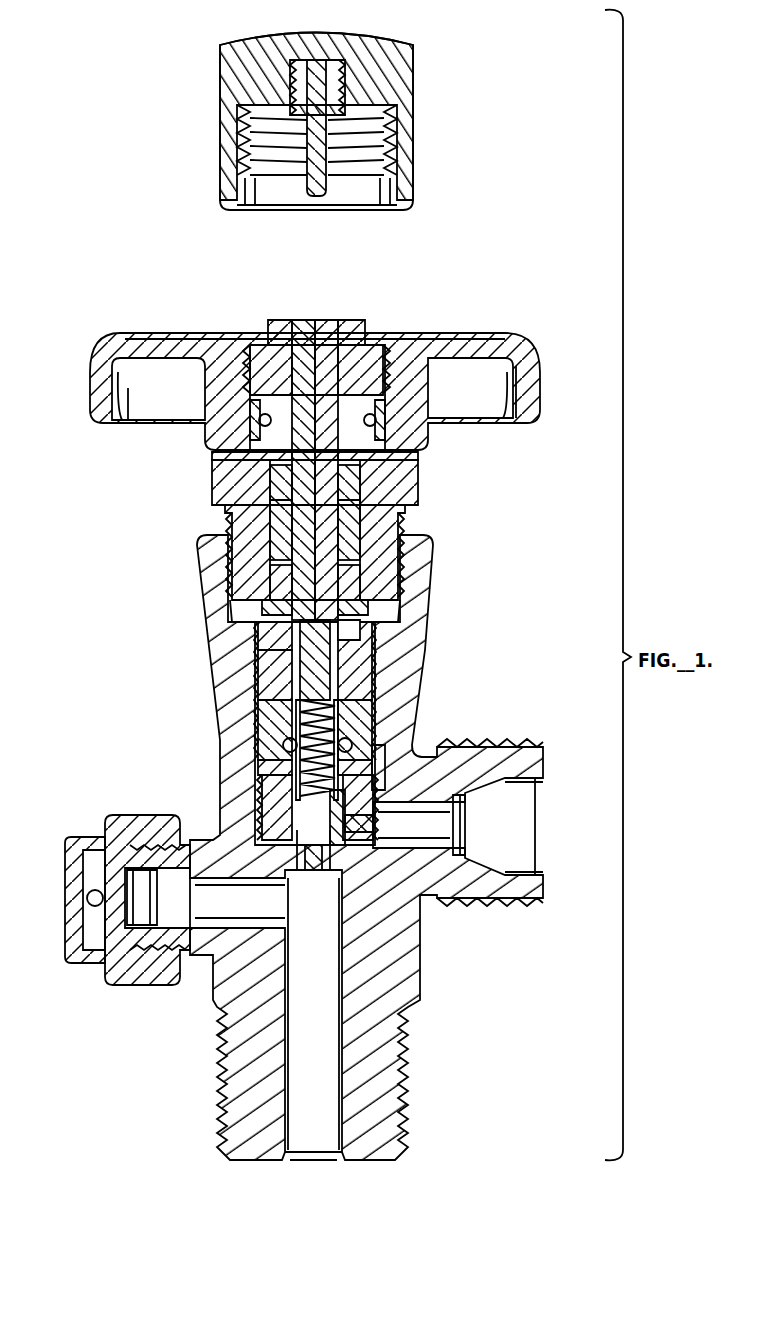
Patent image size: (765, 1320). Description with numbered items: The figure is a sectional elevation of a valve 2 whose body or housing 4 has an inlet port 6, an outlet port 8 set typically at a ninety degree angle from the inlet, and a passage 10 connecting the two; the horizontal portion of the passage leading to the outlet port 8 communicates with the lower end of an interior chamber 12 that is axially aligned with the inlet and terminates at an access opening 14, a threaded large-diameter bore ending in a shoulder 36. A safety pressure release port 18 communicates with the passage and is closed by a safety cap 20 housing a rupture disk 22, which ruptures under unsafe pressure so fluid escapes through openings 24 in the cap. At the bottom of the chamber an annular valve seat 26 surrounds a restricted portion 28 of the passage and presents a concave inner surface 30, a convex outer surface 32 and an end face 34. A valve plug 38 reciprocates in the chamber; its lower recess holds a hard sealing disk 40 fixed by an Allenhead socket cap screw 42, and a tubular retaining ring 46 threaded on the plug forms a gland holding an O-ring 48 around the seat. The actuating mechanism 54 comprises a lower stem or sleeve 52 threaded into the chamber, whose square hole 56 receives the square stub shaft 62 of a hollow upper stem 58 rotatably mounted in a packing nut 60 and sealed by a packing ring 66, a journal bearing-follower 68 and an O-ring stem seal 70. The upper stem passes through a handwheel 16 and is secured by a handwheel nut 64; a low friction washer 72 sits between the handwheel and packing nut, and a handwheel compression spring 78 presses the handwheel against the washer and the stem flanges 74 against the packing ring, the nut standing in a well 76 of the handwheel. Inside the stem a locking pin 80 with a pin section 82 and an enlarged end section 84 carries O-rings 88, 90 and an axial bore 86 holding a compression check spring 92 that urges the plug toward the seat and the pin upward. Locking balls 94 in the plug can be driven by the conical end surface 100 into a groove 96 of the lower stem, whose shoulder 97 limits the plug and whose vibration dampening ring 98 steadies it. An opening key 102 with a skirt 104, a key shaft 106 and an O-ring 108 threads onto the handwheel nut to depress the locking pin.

The valve 2 is at (526, 583).
The body or housing 4 is at (424, 630).
The inlet port 6 is at (318, 1140).
The outlet port 8 is at (530, 828).
The passage 10 is at (437, 834).
The interior chamber 12 is at (296, 783).
The access opening 14 is at (400, 548).
The handwheel 16 is at (505, 344).
The safety pressure release port 18 is at (145, 915).
The safety cap 20 is at (72, 950).
The rupture disk 22 is at (87, 903).
The openings 24 is at (97, 960).
The annular valve seat 26 is at (262, 832).
The restricted portion of the passage 28 is at (322, 888).
The inner concave surface 30 is at (282, 909).
The outer convex surface 32 is at (452, 932).
The end face 34 is at (520, 737).
The shoulder 36 is at (375, 610).
The valve plug 38 is at (372, 768).
The hard sealing disk 40 is at (340, 790).
The Allenhead socket cap screw 42 is at (318, 888).
The tubular retaining ring 46 is at (262, 808).
The O-ring 48 is at (370, 830).
The lower stem or sleeve 52 is at (372, 640).
The actuating mechanism 54 is at (275, 530).
The square hole 56 is at (258, 655).
The upper stem 58 is at (235, 548).
The packing nut 60 is at (404, 567).
The square stub shaft 62 is at (372, 655).
The handwheel nut 64 is at (360, 330).
The packing ring 66 is at (360, 590).
The journal bearing-follower 68 is at (375, 485).
The O-ring stem seal 70 is at (360, 525).
The low friction washer 72 is at (400, 457).
The radially outwardly extending flanges 74 is at (262, 605).
The well 76 is at (255, 395).
The handwheel compression spring 78 is at (392, 372).
The locking pin 80 is at (360, 503).
The pin section 82 is at (316, 326).
The enlarged diameter end section 84 is at (258, 690).
The axial open-ended bore 86 is at (255, 700).
The upper locking pin O-ring 88 is at (232, 486).
The lower locking pin O-ring 90 is at (258, 625).
The compression check spring 92 is at (385, 755).
The locking balls 94 is at (352, 745).
The groove 96 is at (338, 700).
The shoulder 97 is at (365, 680).
The vibration dampening ring 98 is at (258, 760).
The conical end surface 100 is at (297, 745).
The opening key 102 is at (398, 34).
The skirt 104 is at (407, 172).
The key shaft 106 is at (318, 196).
The O-ring 108 is at (392, 112).